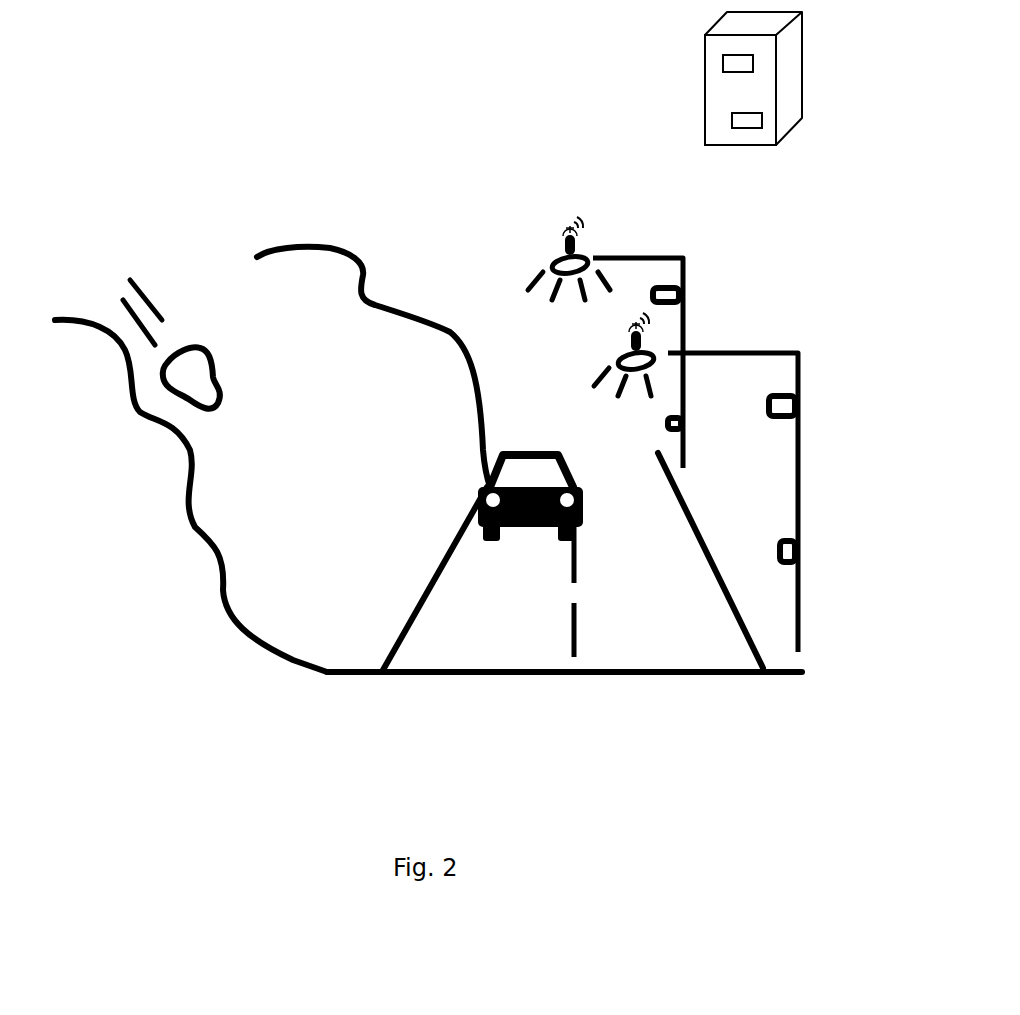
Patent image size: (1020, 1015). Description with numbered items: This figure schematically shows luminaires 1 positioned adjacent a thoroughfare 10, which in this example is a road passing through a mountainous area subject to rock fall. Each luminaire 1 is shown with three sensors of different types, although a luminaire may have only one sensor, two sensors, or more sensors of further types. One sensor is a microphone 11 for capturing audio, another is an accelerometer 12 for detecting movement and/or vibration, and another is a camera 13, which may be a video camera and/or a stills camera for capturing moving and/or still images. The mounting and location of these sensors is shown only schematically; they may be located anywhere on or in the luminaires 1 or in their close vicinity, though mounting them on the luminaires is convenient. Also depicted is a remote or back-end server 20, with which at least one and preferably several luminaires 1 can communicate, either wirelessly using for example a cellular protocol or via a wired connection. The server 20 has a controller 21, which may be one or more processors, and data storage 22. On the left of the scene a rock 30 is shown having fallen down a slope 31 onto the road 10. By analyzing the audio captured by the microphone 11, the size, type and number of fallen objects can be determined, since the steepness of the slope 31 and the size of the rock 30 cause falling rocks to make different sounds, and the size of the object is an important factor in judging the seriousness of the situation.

The luminaire 1 is at (633, 255).
The thoroughfare 10 is at (610, 635).
The microphone 11 is at (560, 230).
The accelerometer 12 is at (777, 552).
The camera 13 is at (767, 403).
The remote server 20 is at (737, 81).
The controller 21 is at (753, 63).
The data storage 22 is at (762, 120).
The rock 30 is at (167, 387).
The slope 31 is at (262, 478).